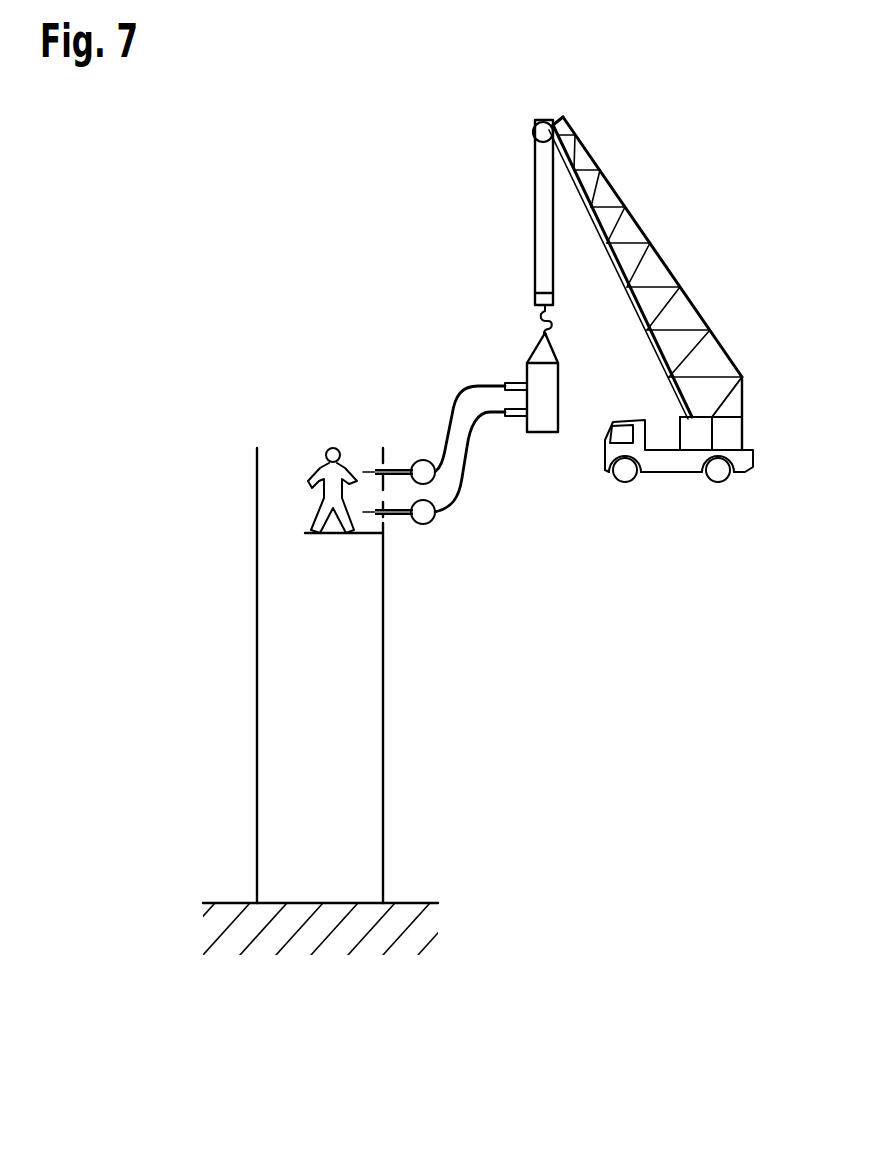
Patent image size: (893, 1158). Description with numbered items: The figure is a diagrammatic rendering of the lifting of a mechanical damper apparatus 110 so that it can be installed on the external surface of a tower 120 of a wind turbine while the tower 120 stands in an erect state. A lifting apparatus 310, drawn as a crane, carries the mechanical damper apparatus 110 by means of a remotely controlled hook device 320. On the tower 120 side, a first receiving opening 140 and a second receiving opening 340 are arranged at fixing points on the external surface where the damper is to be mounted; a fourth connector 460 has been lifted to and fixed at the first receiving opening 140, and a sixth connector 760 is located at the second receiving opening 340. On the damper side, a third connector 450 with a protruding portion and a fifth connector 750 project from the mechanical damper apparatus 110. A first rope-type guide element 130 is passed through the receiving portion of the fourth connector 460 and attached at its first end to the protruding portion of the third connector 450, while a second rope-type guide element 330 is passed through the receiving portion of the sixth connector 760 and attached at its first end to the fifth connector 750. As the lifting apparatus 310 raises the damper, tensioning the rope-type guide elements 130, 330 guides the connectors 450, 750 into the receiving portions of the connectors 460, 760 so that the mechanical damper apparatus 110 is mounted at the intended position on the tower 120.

The mechanical damper apparatus 110 is at (542, 433).
The tower 120 is at (257, 673).
The first rope-type guide element 130 is at (487, 383).
The first receiving opening 140 is at (372, 452).
The lifting apparatus 310 is at (643, 225).
The remotely controlled hook device 320 is at (553, 322).
The second rope-type guide element 330 is at (448, 512).
The second receiving opening 340 is at (396, 530).
The third connector 450 is at (517, 382).
The fourth connector 460 is at (425, 460).
The fifth connector 750 is at (517, 417).
The sixth connector 760 is at (422, 524).